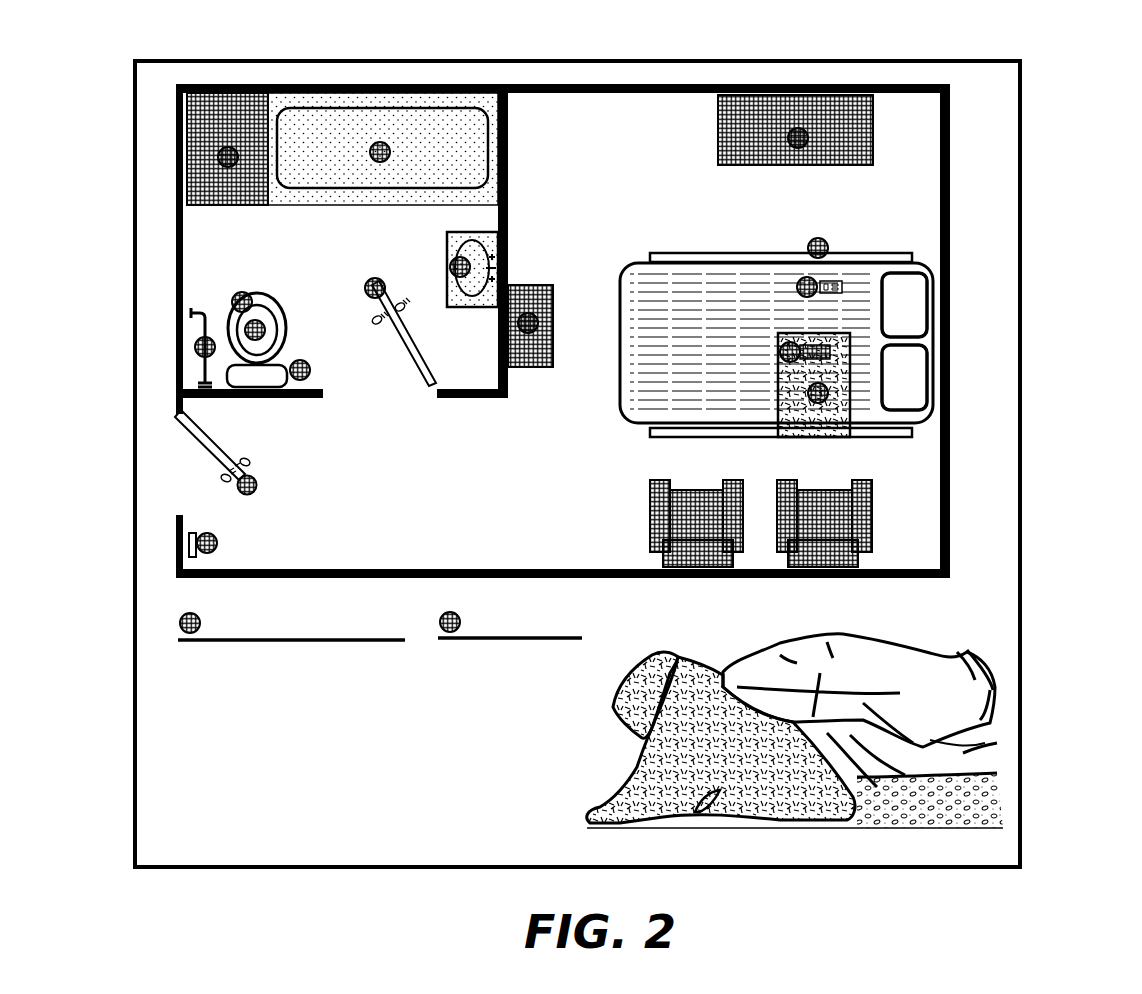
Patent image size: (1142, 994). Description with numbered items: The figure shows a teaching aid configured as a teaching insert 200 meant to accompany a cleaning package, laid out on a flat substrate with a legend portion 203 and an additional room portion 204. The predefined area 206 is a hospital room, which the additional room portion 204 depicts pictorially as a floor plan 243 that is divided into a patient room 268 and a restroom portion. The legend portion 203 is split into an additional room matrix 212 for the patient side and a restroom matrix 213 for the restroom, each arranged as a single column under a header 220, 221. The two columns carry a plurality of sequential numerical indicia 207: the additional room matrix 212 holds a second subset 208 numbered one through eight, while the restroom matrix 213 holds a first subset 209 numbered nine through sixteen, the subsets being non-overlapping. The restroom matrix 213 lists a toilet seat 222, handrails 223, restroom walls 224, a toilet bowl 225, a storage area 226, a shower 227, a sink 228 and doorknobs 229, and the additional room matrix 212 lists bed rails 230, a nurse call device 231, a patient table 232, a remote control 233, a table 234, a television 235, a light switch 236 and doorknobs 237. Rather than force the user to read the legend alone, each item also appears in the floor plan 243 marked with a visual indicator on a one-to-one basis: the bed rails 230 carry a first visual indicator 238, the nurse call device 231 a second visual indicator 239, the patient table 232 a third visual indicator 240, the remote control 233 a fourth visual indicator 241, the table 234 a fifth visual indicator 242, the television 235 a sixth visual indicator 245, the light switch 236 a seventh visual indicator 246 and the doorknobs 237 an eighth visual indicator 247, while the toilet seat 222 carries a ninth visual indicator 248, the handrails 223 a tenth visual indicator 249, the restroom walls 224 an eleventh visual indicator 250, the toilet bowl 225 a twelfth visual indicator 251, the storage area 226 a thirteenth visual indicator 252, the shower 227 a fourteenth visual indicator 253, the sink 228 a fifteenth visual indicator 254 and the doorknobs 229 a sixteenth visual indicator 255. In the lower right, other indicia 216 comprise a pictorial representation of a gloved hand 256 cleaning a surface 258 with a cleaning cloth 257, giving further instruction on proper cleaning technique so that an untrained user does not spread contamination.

The teaching insert 200 is at (1070, 310).
The legend portion 203 is at (352, 853).
The additional room portion 204 is at (637, 304).
The predefined area 206 is at (917, 470).
The plurality of sequential numerical indicia 207 is at (183, 697).
The second subset 208 is at (264, 712).
The first subset 209 is at (502, 715).
The additional room matrix 212 is at (180, 717).
The restroom matrix 213 is at (436, 650).
The other indicia 216 is at (838, 766).
The header 220 is at (300, 621).
The header 221 is at (535, 621).
The toilet seat 222 is at (416, 488).
The handrails 223 is at (363, 490).
The restroom walls 224 is at (456, 518).
The toilet bowl 225 is at (426, 502).
The storage area 226 is at (353, 415).
The shower 227 is at (446, 435).
The sink 228 is at (508, 502).
The doorknobs 229 is at (482, 532).
The bed rails 230 is at (597, 433).
The nurse call device 231 is at (586, 446).
The patient table 232 is at (648, 493).
The remote control 233 is at (580, 537).
The table 234 is at (596, 426).
The television 235 is at (347, 525).
The light switch 236 is at (304, 661).
The doorknobs 237 is at (297, 626).
The first visual indicator 238 is at (821, 241).
The second visual indicator 239 is at (797, 289).
The third visual indicator 240 is at (829, 393).
The fourth visual indicator 241 is at (780, 352).
The fifth visual indicator 242 is at (798, 165).
The floor plan 243 is at (856, 93).
The sixth visual indicator 245 is at (555, 323).
The seventh visual indicator 246 is at (218, 548).
The eighth visual indicator 247 is at (257, 490).
The ninth visual indicator 248 is at (236, 297).
The tenth visual indicator 249 is at (195, 347).
The eleventh visual indicator 250 is at (308, 364).
The twelfth visual indicator 251 is at (266, 331).
The thirteenth visual indicator 252 is at (220, 157).
The fourteenth visual indicator 253 is at (380, 163).
The fifteenth visual indicator 254 is at (450, 268).
The sixteenth visual indicator 255 is at (375, 284).
The gloved hand 256 is at (955, 752).
The cleaning cloth 257 is at (722, 794).
The surface 258 is at (905, 820).
The patient room 268 is at (590, 103).